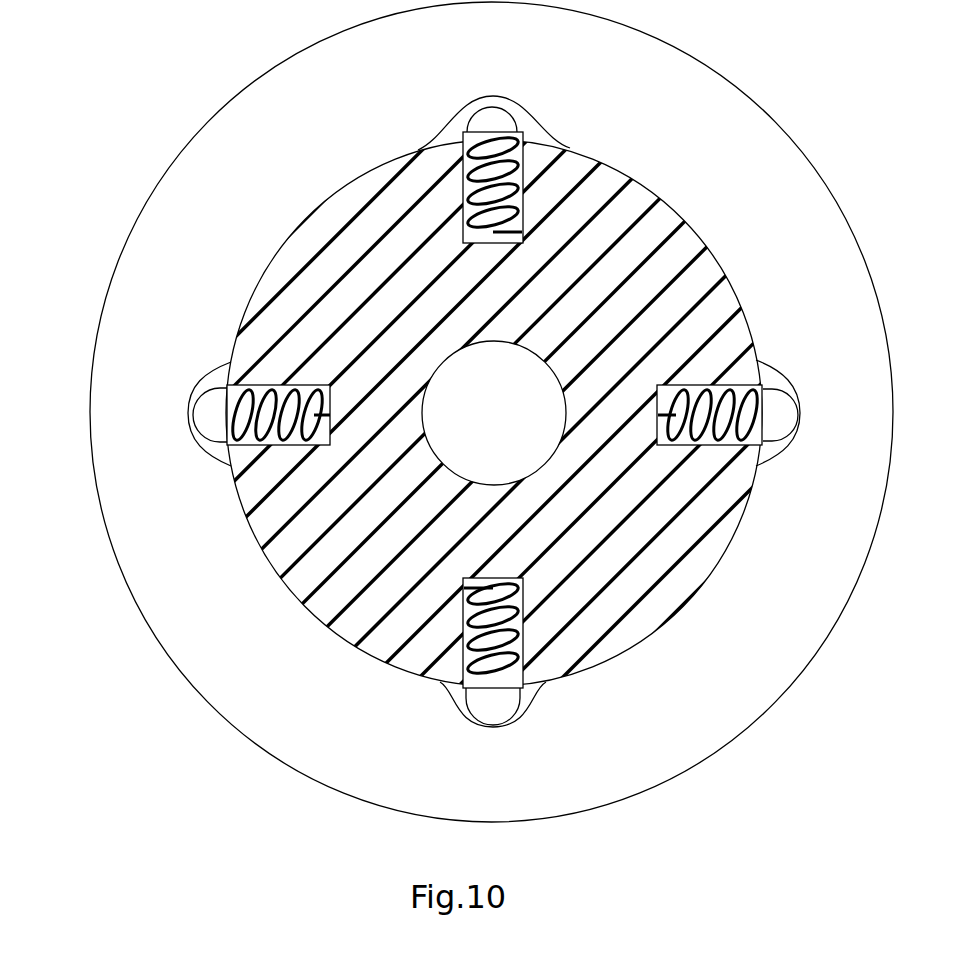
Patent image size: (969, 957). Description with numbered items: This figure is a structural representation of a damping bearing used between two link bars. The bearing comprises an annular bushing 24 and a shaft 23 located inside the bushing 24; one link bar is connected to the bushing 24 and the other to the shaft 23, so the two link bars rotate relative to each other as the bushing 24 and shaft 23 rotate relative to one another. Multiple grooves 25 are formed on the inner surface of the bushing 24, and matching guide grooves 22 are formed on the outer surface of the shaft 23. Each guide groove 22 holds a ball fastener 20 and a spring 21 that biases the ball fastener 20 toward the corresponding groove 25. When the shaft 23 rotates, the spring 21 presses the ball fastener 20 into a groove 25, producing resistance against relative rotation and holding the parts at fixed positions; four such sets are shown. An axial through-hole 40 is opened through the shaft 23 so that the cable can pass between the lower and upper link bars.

The ball fastener 20 is at (493, 122).
The spring 21 is at (527, 230).
The guide groove 22 is at (457, 595).
The shaft 23 is at (373, 240).
The annular bushing 24 is at (653, 740).
The groove 25 is at (537, 698).
The axial through-hole 40 is at (508, 407).